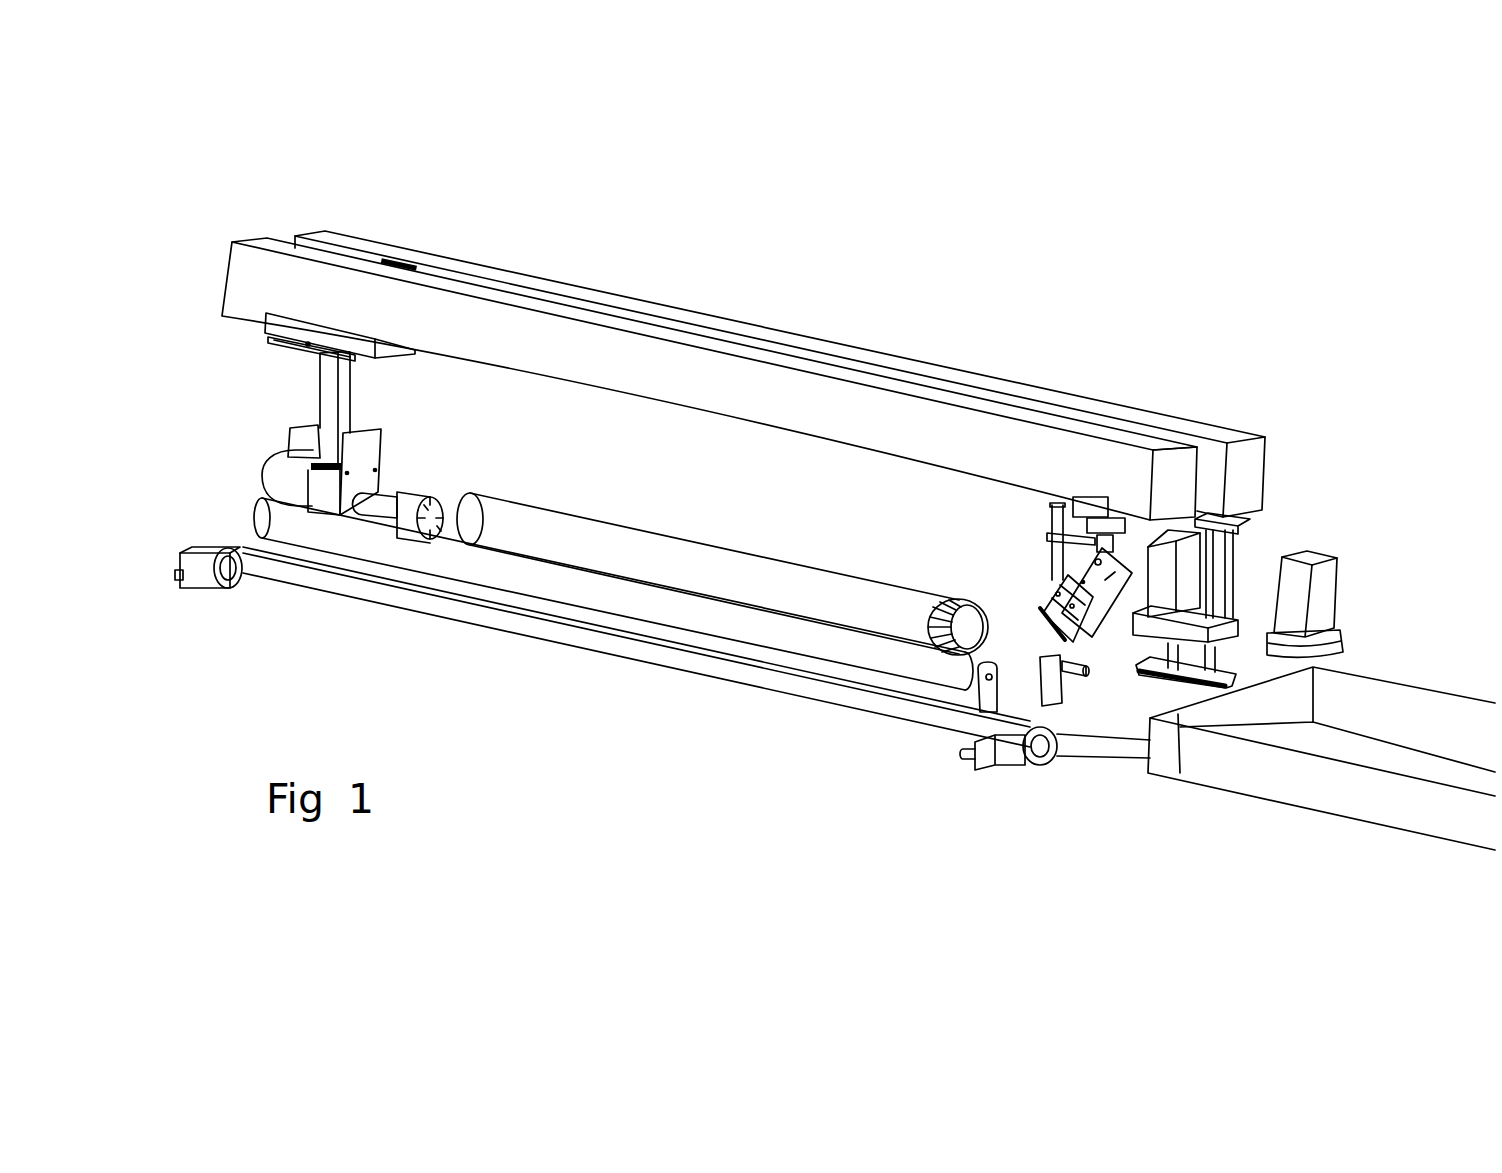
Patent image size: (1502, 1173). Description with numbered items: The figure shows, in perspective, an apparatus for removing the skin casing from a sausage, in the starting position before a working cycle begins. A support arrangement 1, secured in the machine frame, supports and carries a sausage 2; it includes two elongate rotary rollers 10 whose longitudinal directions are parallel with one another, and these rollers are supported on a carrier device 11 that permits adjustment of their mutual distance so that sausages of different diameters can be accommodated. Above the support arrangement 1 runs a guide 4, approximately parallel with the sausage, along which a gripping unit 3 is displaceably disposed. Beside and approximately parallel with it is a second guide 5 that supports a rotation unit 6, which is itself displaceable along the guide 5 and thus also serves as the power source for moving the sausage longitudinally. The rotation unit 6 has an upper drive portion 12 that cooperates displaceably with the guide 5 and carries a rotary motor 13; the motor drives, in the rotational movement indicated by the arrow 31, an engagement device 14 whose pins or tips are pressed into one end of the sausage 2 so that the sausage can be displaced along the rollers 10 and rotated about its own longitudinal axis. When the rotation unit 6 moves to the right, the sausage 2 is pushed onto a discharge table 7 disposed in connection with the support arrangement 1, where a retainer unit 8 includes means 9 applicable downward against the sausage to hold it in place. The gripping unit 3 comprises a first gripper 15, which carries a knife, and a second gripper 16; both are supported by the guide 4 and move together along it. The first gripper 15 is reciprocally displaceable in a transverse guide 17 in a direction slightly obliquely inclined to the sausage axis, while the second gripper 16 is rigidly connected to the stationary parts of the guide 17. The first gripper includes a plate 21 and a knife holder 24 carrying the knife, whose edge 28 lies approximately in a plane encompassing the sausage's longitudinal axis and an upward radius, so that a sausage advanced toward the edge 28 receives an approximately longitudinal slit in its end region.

The support arrangement 1 is at (631, 798).
The sausage 2 is at (610, 540).
The gripping unit 3 is at (1287, 522).
The guide 4 is at (895, 360).
The second guide 5 is at (510, 328).
The rotation unit 6 is at (213, 451).
The discharge table 7 is at (1353, 796).
The retainer unit 8 is at (1325, 584).
The means 9 is at (1325, 648).
The rotary rollers 10 is at (652, 605).
The carrier device 11 is at (773, 682).
The upper drive portion 12 is at (388, 347).
The rotary motor 13 is at (288, 482).
The engagement device 14 is at (413, 498).
The first gripper 15 is at (1027, 593).
The second gripper 16 is at (1190, 683).
The transverse guide 17 is at (1057, 500).
The plate 21 is at (1104, 547).
The knife holder 24 is at (1067, 586).
The edge 28 is at (1090, 656).
The arrow 31 is at (716, 562).